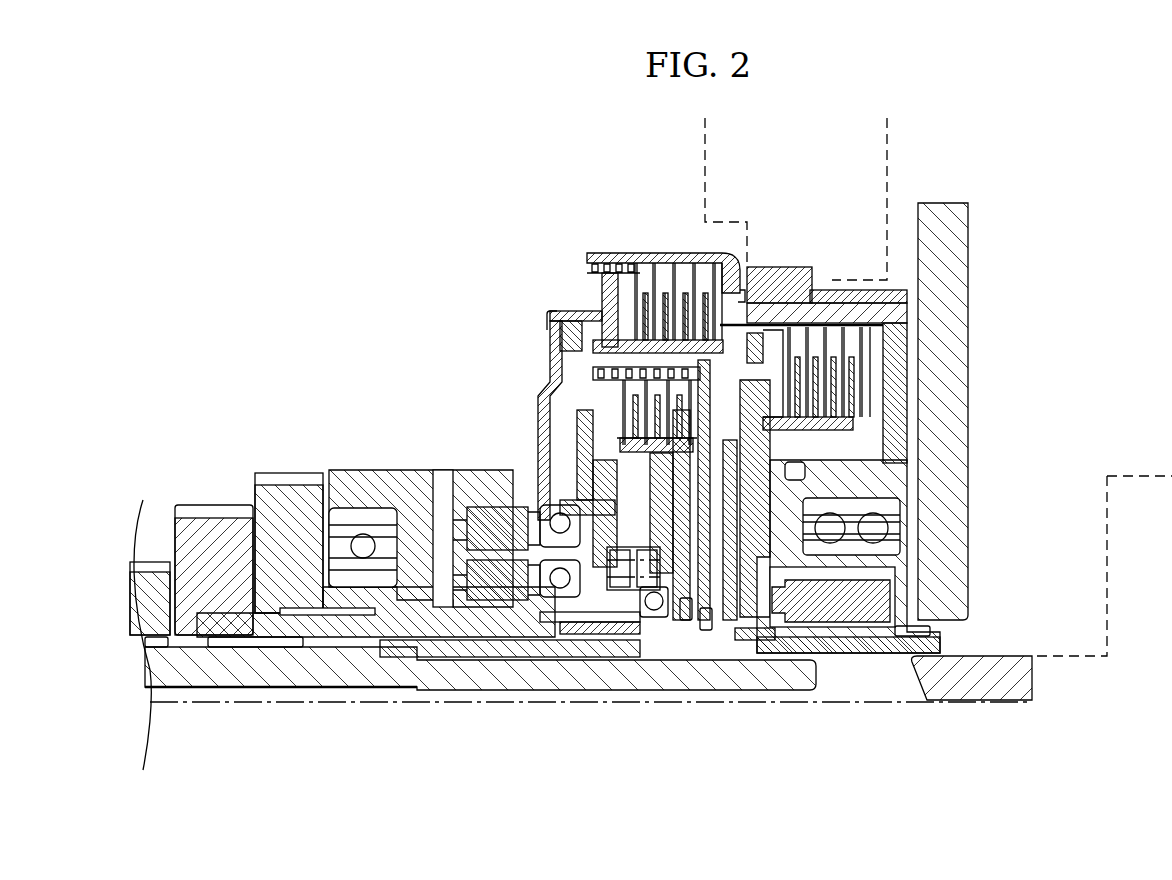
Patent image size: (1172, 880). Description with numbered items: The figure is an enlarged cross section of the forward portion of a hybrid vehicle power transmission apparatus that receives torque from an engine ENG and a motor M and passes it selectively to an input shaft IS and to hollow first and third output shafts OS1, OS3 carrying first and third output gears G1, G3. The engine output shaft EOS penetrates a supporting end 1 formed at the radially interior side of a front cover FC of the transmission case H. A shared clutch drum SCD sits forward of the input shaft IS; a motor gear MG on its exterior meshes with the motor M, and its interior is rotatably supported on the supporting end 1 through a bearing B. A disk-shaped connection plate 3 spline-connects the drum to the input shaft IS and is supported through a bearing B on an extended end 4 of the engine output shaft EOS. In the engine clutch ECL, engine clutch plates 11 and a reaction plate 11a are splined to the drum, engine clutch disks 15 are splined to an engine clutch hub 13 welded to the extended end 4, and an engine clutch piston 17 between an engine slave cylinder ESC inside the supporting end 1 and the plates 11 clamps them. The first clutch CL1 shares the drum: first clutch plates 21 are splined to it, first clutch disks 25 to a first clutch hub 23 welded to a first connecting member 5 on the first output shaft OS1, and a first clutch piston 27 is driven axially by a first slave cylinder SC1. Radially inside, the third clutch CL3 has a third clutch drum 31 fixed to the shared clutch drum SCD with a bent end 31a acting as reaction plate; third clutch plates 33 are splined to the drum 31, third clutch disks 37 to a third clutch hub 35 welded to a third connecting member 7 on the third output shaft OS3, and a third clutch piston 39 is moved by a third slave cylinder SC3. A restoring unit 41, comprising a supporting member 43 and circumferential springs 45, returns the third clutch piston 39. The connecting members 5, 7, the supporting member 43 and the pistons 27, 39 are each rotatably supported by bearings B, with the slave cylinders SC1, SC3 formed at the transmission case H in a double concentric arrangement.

The supporting end 1 is at (855, 568).
The connection plate 3 is at (712, 478).
The extended end 4 is at (750, 645).
The first connecting member 5 is at (665, 618).
The third connecting member 7 is at (570, 622).
The engine clutch plates 11 is at (870, 366).
The reaction plate 11a is at (787, 366).
The engine clutch hub 13 is at (880, 450).
The engine clutch disks 15 is at (830, 392).
The engine clutch piston 17 is at (880, 540).
The first clutch plates 21 is at (697, 285).
The first clutch hub 23 is at (843, 517).
The first clutch disks 25 is at (655, 300).
The first clutch piston 27 is at (560, 345).
The third clutch drum 31 is at (562, 380).
The bent end 31a is at (745, 293).
The third clutch plates 33 is at (620, 400).
The third clutch hub 35 is at (797, 655).
The third clutch disks 37 is at (640, 420).
The third clutch piston 39 is at (585, 445).
The restoring unit 41 is at (635, 703).
The supporting member 43 is at (640, 613).
The springs 45 is at (620, 613).
The bearing B is at (890, 510).
The first clutch CL1 is at (604, 258).
The third clutch CL3 is at (547, 383).
The engine clutch ECL is at (884, 408).
The engine ENG is at (1107, 507).
The engine output shaft EOS is at (1013, 690).
The engine slave cylinder ESC is at (858, 627).
The front cover FC is at (955, 253).
The first output gear G1 is at (205, 510).
The third output gear G3 is at (286, 475).
The transmission case H is at (343, 480).
The input shaft IS is at (505, 680).
The motor M is at (700, 145).
The motor gear MG is at (797, 273).
The first output shaft OS1 is at (385, 647).
The third output shaft OS3 is at (452, 625).
The first slave cylinder SC1 is at (487, 500).
The third slave cylinder SC3 is at (488, 558).
The shared clutch drum SCD is at (782, 300).